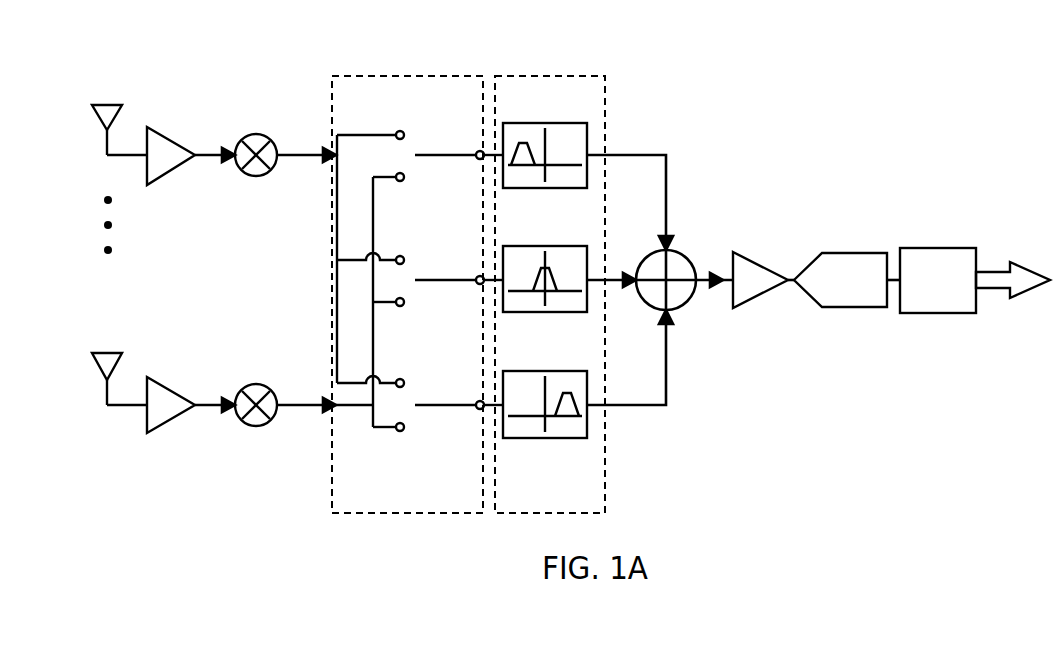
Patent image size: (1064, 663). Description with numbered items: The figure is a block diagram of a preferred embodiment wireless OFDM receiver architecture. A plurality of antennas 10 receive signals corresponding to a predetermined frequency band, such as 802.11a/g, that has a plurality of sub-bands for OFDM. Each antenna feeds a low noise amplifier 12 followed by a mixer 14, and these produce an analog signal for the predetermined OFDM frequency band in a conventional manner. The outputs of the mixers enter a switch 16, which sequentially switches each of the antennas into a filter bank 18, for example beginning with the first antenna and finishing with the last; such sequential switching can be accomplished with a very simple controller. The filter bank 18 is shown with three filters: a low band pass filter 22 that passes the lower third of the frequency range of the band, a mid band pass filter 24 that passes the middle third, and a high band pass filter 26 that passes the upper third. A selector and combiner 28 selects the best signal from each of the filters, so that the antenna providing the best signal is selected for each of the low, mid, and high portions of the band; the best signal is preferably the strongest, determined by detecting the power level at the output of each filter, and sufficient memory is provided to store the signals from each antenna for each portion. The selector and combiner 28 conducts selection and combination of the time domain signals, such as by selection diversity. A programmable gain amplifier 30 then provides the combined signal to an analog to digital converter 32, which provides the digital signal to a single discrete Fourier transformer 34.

The antenna 10 is at (105, 352).
The low noise amplifier 12 is at (177, 405).
The mixer 14 is at (266, 405).
The switch 16 is at (405, 75).
The filter bank 18 is at (570, 267).
The low band pass filter 22 is at (549, 175).
The mid band pass filter 24 is at (540, 313).
The high band pass filter 26 is at (548, 440).
The selector and combiner 28 is at (688, 302).
The programmable gain amplifier 30 is at (733, 250).
The analog to digital converter 32 is at (822, 252).
The discrete Fourier transformer 34 is at (940, 248).